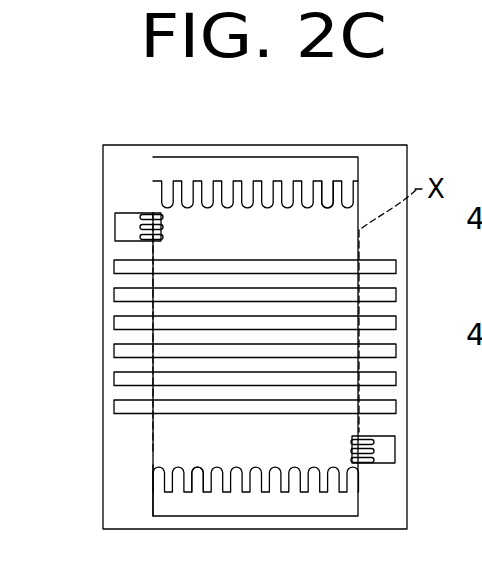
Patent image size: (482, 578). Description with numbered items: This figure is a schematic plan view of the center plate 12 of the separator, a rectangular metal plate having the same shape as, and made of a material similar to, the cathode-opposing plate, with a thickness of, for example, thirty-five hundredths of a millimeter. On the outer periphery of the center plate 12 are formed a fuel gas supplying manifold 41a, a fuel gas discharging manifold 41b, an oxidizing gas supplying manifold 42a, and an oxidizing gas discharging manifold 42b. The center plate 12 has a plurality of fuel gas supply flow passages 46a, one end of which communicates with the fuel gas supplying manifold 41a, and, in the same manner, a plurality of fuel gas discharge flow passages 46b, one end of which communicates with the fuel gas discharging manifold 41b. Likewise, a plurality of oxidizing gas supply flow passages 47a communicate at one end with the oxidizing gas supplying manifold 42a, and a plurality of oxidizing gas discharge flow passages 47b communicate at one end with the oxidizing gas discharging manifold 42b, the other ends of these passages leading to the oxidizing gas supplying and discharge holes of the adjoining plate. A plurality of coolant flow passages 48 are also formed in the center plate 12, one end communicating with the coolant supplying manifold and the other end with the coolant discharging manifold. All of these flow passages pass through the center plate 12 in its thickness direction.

The center plate 12 is at (132, 145).
The fuel gas supplying manifold 41a is at (125, 226).
The fuel gas discharging manifold 41b is at (397, 452).
The oxidizing gas supplying manifold 42a is at (276, 179).
The oxidizing gas discharging manifold 42b is at (246, 507).
The fuel gas supply flow passages 46a is at (166, 215).
The fuel gas discharge flow passages 46b is at (353, 459).
The oxidizing gas supply flow passages 47a is at (333, 178).
The oxidizing gas discharge flow passages 47b is at (194, 480).
The coolant flow passages 48 is at (114, 351).